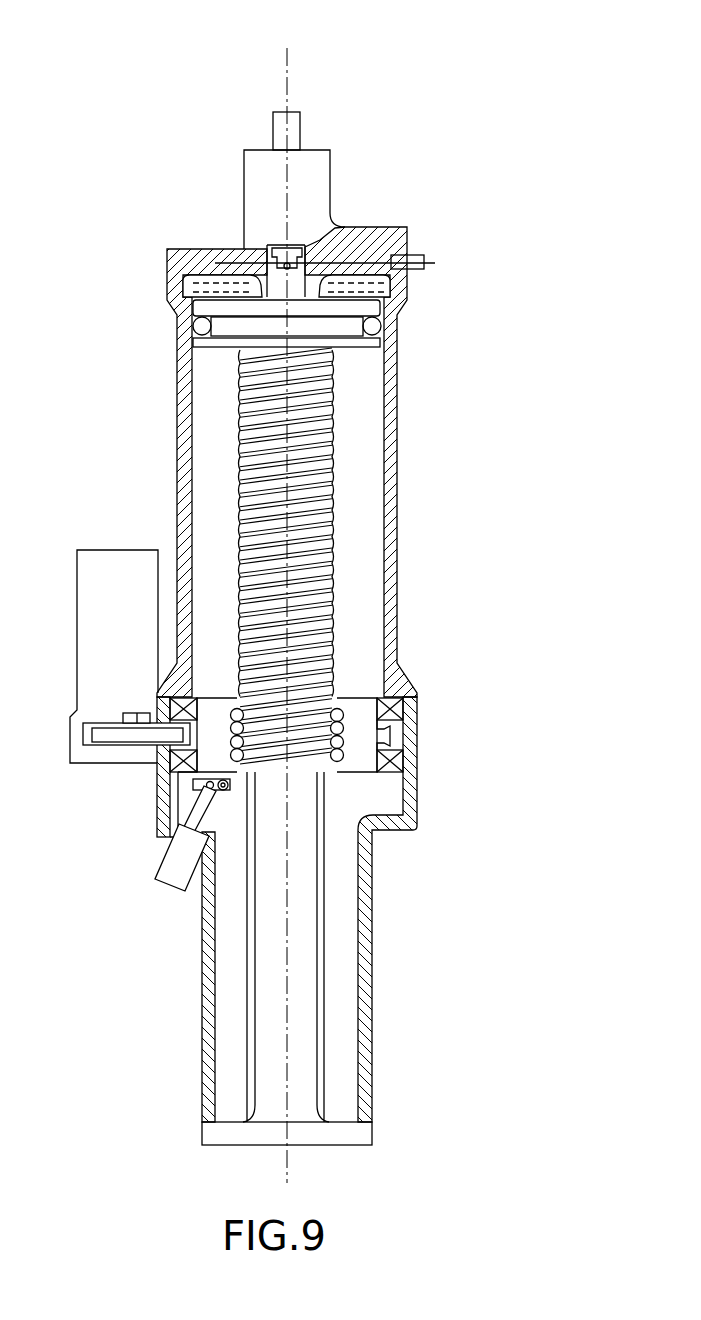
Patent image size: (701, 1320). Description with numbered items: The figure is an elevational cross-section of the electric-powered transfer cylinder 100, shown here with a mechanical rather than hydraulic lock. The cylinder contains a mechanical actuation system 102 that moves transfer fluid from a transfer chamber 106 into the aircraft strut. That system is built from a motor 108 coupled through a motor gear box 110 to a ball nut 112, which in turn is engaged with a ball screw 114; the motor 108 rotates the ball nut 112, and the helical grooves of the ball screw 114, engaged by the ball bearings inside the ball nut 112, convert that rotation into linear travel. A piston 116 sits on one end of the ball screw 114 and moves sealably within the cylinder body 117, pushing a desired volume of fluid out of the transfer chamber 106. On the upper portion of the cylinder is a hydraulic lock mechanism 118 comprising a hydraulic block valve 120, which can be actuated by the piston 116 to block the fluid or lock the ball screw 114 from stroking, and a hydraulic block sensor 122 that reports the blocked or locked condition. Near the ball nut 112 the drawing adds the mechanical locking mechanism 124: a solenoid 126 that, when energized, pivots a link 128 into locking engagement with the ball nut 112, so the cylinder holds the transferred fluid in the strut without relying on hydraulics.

The electric-powered transfer cylinder 100 is at (157, 113).
The mechanical actuation system 102 is at (381, 794).
The transfer chamber 106 is at (196, 287).
The motor 108 is at (118, 550).
The motor gear box 110 is at (116, 745).
The ball nut 112 is at (214, 740).
The ball screw 114 is at (354, 403).
The piston 116 is at (318, 349).
The cylinder body 117 is at (398, 327).
The hydraulic lock mechanism 118 is at (363, 189).
The hydraulic block valve 120 is at (276, 266).
The hydraulic block sensor 122 is at (302, 124).
The mechanical locking mechanism 124 is at (178, 931).
The solenoid 126 is at (181, 875).
The link 128 is at (191, 812).